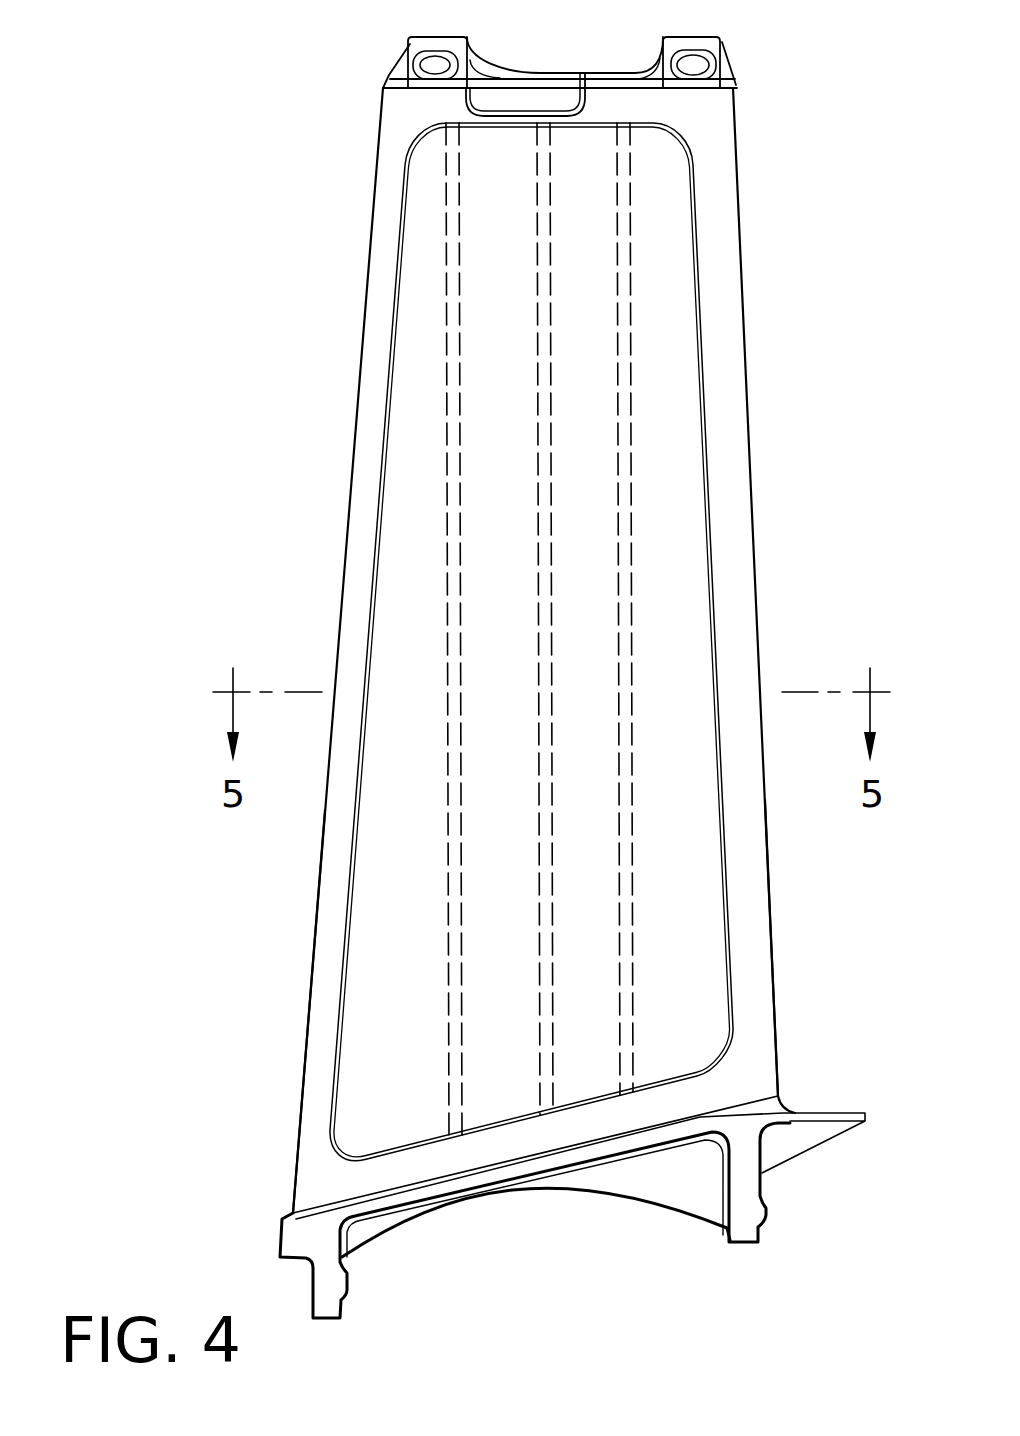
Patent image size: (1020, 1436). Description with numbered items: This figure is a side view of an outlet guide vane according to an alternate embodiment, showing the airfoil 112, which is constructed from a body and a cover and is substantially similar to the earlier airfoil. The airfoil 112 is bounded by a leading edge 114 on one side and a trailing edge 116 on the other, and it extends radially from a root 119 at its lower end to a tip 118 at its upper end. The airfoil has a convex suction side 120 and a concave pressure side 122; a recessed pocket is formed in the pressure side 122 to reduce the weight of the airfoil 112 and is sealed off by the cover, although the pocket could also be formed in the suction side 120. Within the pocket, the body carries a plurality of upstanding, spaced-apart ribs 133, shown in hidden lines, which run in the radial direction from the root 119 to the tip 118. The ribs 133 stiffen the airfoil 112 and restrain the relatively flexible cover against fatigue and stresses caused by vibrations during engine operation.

The airfoil 112 is at (713, 137).
The leading edge 114 is at (372, 203).
The trailing edge 116 is at (743, 217).
The tip 118 is at (598, 82).
The root 119 is at (693, 1113).
The convex suction side 120 is at (750, 993).
The concave pressure side 122 is at (313, 1083).
The ribs 133 is at (537, 282).